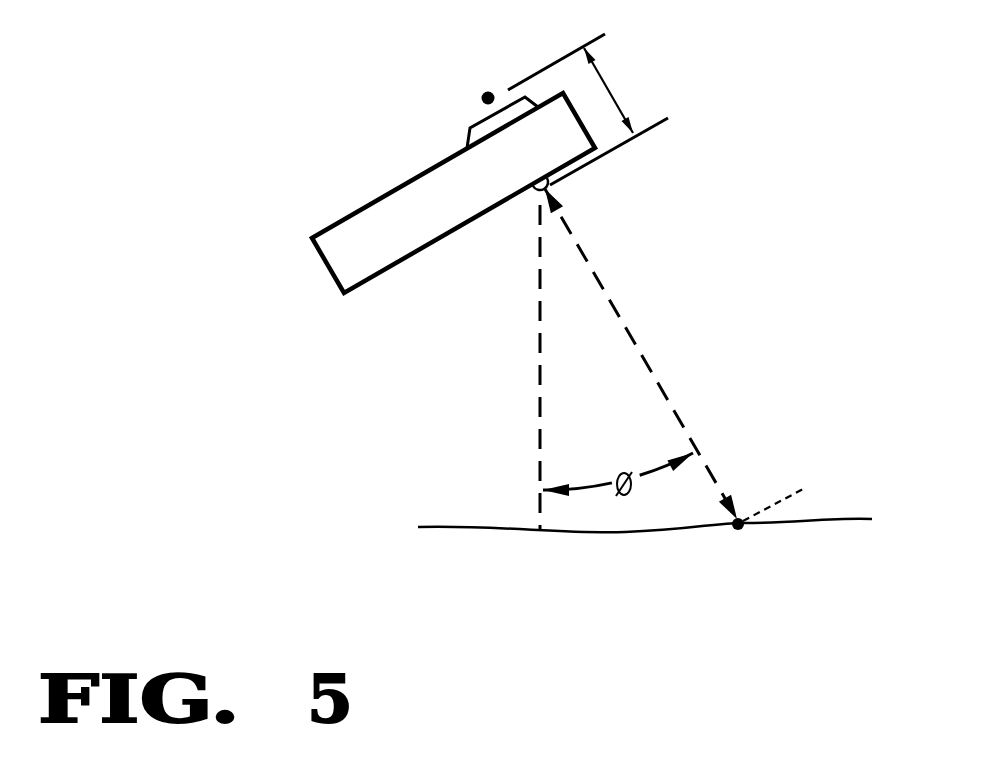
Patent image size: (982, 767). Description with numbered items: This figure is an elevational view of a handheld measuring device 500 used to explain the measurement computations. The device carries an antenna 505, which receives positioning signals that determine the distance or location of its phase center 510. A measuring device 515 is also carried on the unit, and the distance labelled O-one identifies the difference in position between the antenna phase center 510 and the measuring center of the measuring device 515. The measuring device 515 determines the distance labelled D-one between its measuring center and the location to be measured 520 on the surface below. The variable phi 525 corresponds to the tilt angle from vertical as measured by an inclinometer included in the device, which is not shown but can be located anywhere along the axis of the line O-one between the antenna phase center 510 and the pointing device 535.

The handheld measuring device 500 is at (330, 243).
The antenna 505 is at (632, 72).
The phase center 510 is at (483, 93).
The measuring device 515 is at (570, 188).
The location to be measured 520 is at (745, 517).
The tilt angle 525 is at (617, 472).
The pointing device 535 is at (535, 197).